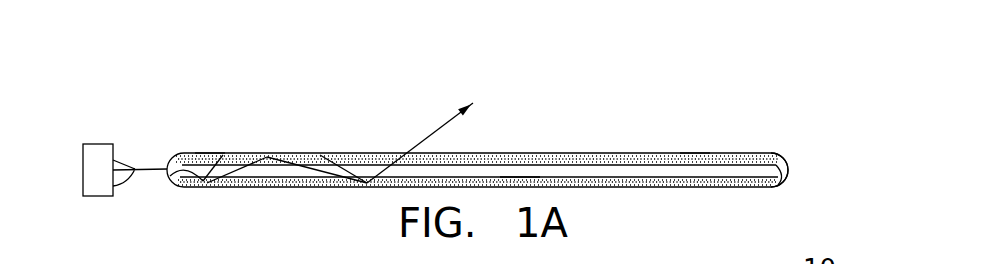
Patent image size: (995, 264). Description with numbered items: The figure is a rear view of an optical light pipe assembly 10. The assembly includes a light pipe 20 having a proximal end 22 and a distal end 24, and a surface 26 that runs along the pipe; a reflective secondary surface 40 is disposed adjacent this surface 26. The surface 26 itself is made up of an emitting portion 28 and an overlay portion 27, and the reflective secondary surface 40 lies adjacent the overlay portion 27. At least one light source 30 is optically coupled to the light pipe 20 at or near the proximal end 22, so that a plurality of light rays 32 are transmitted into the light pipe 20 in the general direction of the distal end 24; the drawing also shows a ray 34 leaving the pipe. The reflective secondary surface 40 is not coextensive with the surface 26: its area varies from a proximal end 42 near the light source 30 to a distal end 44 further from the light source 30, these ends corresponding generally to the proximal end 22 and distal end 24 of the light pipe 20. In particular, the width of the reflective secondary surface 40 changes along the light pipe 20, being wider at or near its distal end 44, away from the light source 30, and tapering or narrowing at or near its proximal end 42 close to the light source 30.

The optical light pipe assembly 10 is at (514, 136).
The light pipe 20 is at (622, 155).
The proximal end 22 is at (158, 140).
The distal end 24 is at (793, 160).
The surface 26 is at (223, 155).
The overlay portion 27 is at (772, 168).
The emitting portion 28 is at (270, 153).
The light source 30 is at (83, 196).
The light rays 32 is at (320, 155).
The emitted light ray 34 is at (427, 137).
The reflective secondary surface 40 is at (517, 170).
The proximal end 42 is at (207, 143).
The distal end 44 is at (695, 138).